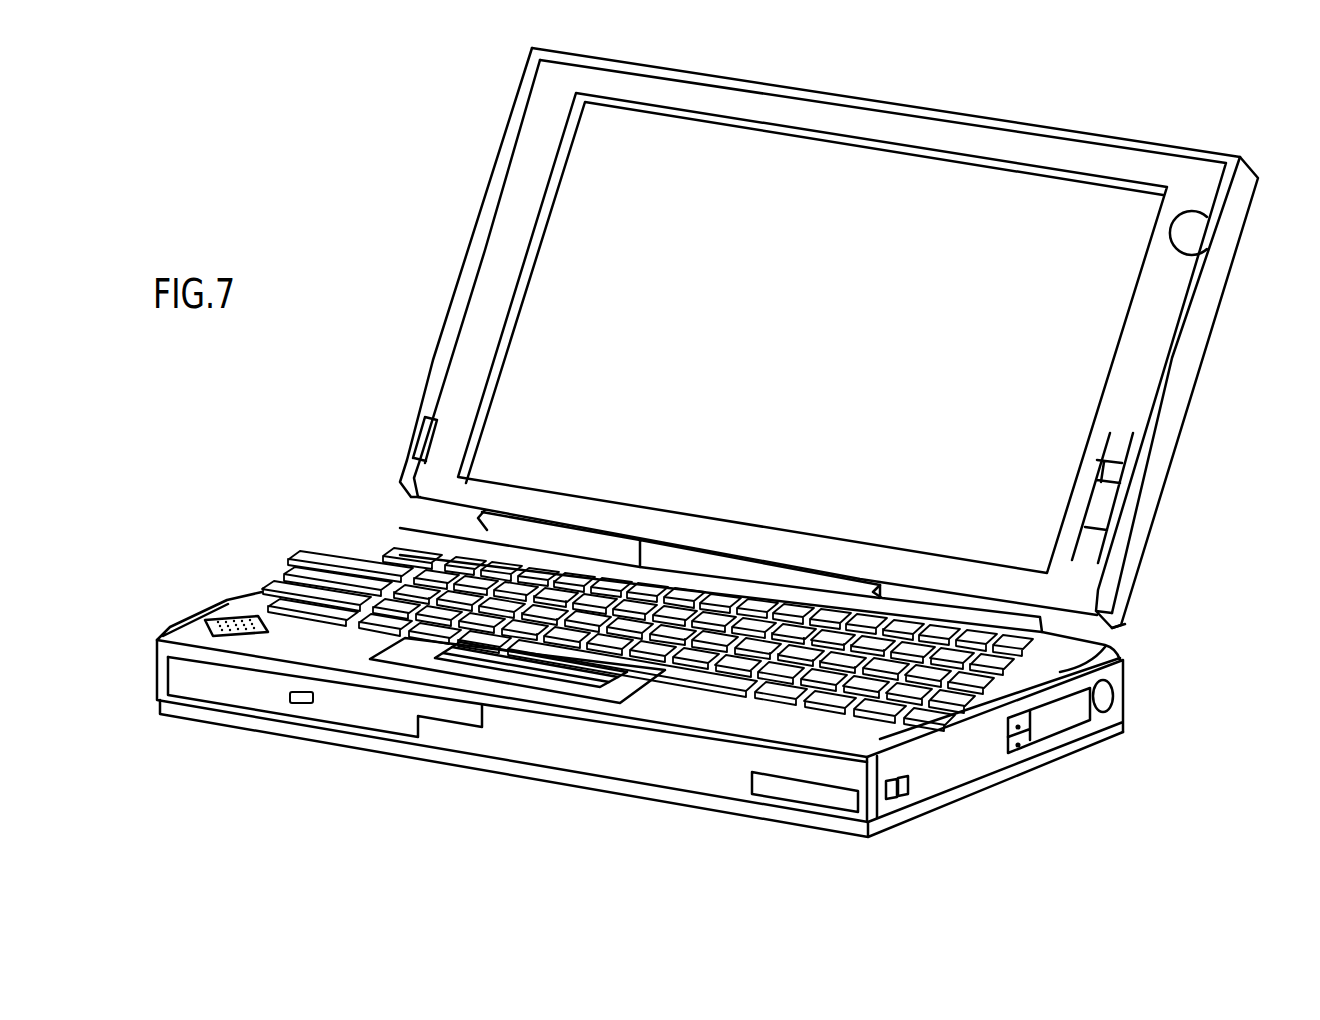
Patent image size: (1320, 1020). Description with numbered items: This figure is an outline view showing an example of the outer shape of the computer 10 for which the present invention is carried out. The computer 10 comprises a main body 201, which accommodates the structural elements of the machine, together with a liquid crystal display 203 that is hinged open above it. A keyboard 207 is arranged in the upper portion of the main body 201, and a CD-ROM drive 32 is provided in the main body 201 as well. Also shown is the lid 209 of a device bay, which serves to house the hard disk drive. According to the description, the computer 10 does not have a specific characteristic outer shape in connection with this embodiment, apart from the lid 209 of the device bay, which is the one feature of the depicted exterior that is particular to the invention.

The computer 10 is at (457, 267).
The liquid crystal display 203 is at (848, 147).
The keyboard 207 is at (318, 562).
The main body 201 is at (972, 803).
The CD-ROM drive 32 is at (352, 710).
The lid of a device bay 209 is at (820, 792).